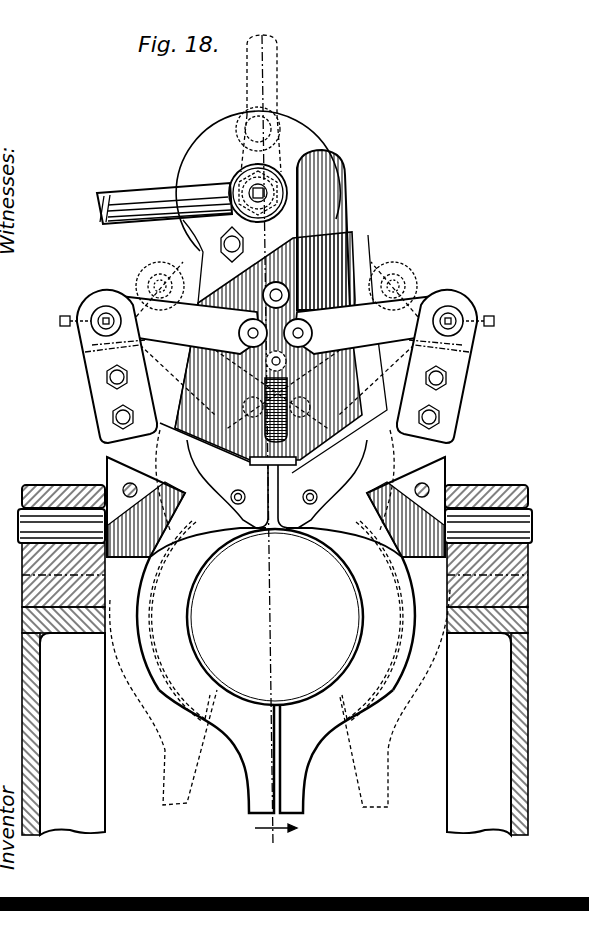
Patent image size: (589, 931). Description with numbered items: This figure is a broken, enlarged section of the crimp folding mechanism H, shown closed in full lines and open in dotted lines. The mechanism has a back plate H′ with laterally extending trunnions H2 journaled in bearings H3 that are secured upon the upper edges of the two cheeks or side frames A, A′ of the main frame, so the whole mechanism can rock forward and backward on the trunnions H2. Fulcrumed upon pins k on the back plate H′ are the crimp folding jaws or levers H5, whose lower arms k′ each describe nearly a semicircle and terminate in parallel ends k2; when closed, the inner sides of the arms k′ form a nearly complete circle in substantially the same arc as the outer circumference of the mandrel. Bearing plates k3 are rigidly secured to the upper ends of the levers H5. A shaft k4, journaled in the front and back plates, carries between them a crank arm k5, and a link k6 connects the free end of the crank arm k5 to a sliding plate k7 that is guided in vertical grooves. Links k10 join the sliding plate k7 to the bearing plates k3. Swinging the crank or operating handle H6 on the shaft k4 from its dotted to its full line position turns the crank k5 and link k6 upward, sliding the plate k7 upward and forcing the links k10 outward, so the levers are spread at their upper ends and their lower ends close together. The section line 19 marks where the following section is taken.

The crank or operating handle H6 is at (268, 72).
The crimp folding mechanism H is at (522, 519).
The back plate H′ is at (333, 161).
The trunnions H2 is at (33, 517).
The bearings H3 is at (58, 496).
The crimp folding jaws or levers H5 is at (200, 607).
The pins k is at (232, 500).
The lower arms k′ is at (222, 678).
The parallel ends k2 is at (247, 787).
The bearing plates k3 is at (82, 340).
The shaft k4 is at (251, 186).
The crank arm k5 is at (247, 112).
The link k6 is at (286, 242).
The sliding plate k7 is at (300, 306).
The links k10 is at (143, 297).
The cheek or side frame A is at (63, 689).
The cheek or side frame A′ is at (487, 689).
The section line 19 is at (276, 835).